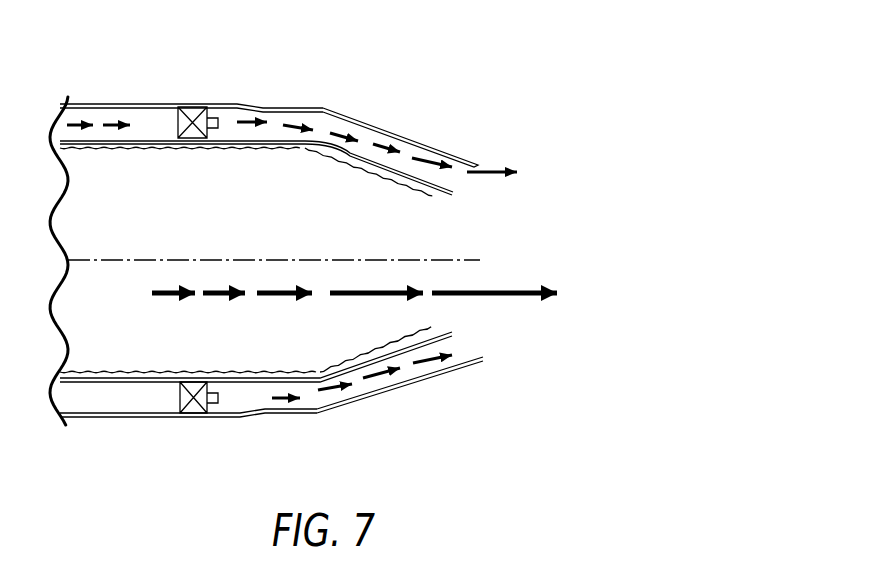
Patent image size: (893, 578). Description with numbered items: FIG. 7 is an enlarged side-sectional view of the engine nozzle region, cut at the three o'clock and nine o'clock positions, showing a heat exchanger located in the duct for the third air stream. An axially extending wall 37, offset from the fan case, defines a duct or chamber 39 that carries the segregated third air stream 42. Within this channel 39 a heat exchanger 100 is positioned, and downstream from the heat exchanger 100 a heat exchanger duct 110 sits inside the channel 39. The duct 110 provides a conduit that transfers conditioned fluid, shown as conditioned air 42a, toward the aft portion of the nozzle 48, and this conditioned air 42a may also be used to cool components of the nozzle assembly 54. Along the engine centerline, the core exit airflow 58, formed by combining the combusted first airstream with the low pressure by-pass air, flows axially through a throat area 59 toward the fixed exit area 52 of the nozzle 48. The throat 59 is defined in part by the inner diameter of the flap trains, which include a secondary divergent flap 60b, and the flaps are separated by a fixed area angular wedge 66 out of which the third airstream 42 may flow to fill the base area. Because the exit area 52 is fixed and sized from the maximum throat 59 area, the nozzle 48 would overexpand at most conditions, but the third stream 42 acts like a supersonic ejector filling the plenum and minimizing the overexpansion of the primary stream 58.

The axially extending wall 37 is at (140, 140).
The duct or chamber 39 is at (92, 115).
The third air stream 42 is at (110, 120).
The conditioned air 42a is at (427, 160).
The nozzle 48 is at (378, 125).
The nozzle exit area 52 is at (492, 240).
The nozzle assembly 54 is at (515, 153).
The core exit airflow 58 is at (165, 292).
The throat area 59 is at (293, 248).
The secondary divergent flap 60b is at (413, 332).
The fixed area angular wedge 66 is at (377, 349).
The heat exchanger 100 is at (192, 110).
The heat exchanger duct 110 is at (213, 118).